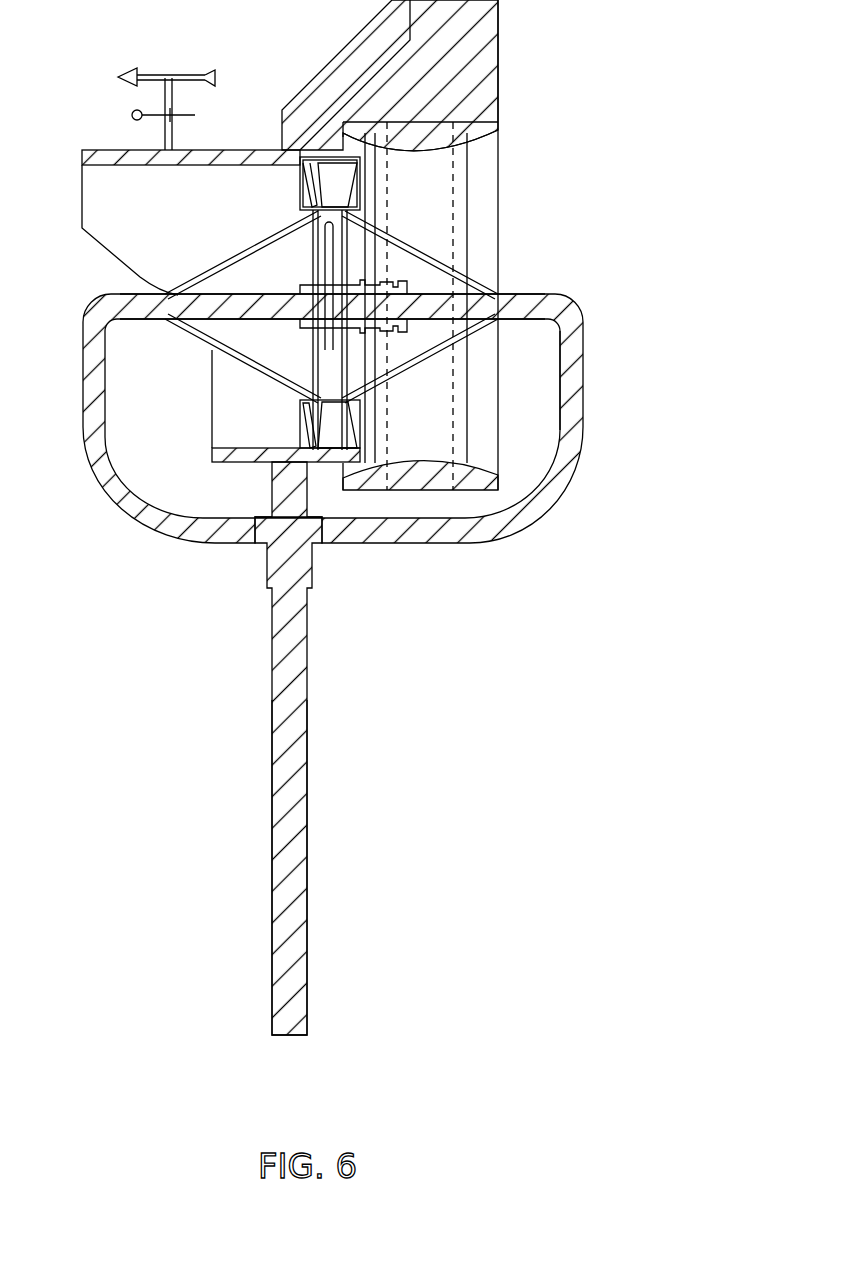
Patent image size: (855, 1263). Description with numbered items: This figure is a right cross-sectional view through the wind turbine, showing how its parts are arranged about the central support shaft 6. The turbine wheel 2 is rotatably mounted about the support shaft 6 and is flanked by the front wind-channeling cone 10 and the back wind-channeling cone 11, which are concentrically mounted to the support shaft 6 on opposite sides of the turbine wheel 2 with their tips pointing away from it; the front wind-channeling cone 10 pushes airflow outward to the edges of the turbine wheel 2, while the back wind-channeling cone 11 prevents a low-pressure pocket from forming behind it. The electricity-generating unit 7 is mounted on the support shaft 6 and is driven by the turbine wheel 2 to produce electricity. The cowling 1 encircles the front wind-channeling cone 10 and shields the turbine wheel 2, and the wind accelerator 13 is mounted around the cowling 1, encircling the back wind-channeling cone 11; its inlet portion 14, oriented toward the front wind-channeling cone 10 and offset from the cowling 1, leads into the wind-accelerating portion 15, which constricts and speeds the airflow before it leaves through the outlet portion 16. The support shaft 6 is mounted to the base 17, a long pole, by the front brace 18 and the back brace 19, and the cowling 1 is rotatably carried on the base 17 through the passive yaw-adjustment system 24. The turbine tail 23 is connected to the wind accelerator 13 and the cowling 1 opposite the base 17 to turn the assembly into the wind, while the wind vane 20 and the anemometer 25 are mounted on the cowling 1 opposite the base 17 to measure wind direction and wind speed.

The cowling 1 is at (82, 178).
The turbine wheel 2 is at (306, 185).
The support shaft 6 is at (505, 300).
The electricity-generating unit 7 is at (390, 285).
The front wind-channeling cone 10 is at (230, 257).
The back wind-channeling cone 11 is at (402, 238).
The wind accelerator 13 is at (505, 221).
The inlet portion 14 is at (363, 122).
The wind-accelerating portion 15 is at (405, 462).
The outlet portion 16 is at (498, 130).
The base 17 is at (272, 777).
The front brace 18 is at (100, 410).
The back brace 19 is at (560, 368).
The wind vane 20 is at (185, 76).
The turbine tail 23 is at (352, 48).
The passive yaw-adjustment system 24 is at (310, 578).
The anemometer 25 is at (130, 116).